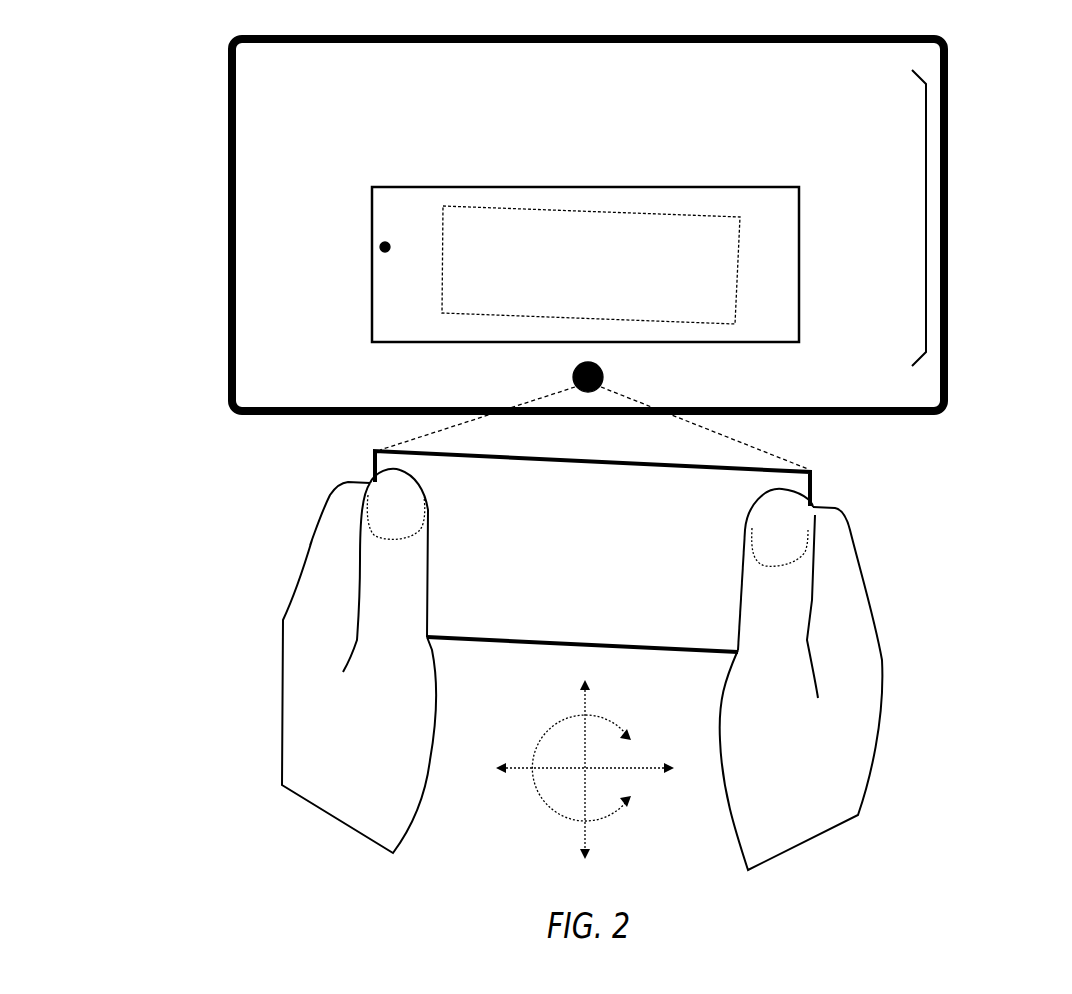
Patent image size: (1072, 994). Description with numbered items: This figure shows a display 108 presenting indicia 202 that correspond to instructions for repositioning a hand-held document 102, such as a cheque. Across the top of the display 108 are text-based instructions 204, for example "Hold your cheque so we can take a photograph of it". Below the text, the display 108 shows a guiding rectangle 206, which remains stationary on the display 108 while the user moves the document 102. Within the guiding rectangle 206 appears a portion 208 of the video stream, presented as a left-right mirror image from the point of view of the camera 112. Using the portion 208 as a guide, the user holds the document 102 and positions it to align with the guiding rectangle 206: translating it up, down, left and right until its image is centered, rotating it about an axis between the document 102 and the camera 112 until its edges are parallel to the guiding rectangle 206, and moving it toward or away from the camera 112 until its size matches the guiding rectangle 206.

The hand-held document 102 is at (373, 462).
The display 108 is at (233, 172).
The camera 112 is at (573, 380).
The indicia 202 is at (926, 208).
The text-based instructions 204 is at (258, 100).
The guiding rectangle 206 is at (372, 205).
The portion of the video stream 208 is at (383, 247).